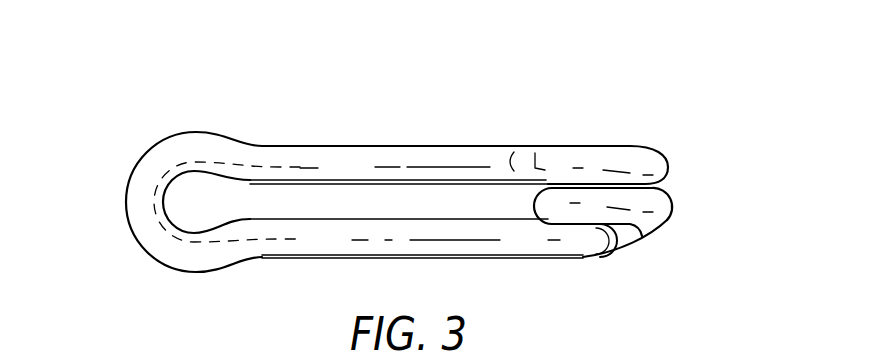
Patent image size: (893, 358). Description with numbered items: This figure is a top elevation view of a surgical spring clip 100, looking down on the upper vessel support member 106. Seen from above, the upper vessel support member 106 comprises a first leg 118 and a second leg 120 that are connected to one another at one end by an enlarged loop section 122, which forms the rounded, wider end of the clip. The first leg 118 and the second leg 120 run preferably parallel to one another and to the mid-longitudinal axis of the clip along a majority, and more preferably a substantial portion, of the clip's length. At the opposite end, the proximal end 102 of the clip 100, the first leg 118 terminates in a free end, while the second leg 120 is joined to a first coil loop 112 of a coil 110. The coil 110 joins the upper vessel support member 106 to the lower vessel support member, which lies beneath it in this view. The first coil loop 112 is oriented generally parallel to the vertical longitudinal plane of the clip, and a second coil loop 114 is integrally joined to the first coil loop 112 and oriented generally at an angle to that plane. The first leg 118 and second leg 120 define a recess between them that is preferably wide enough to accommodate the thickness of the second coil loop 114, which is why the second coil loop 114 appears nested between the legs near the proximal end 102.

The surgical spring clip 100 is at (135, 118).
The proximal end 102 is at (656, 152).
The upper vessel support member 106 is at (450, 158).
The coil 110 is at (660, 226).
The first coil loop 112 is at (557, 155).
The second coil loop 114 is at (583, 208).
The first leg 118 is at (285, 240).
The second leg 120 is at (305, 158).
The enlarged loop section 122 is at (147, 233).